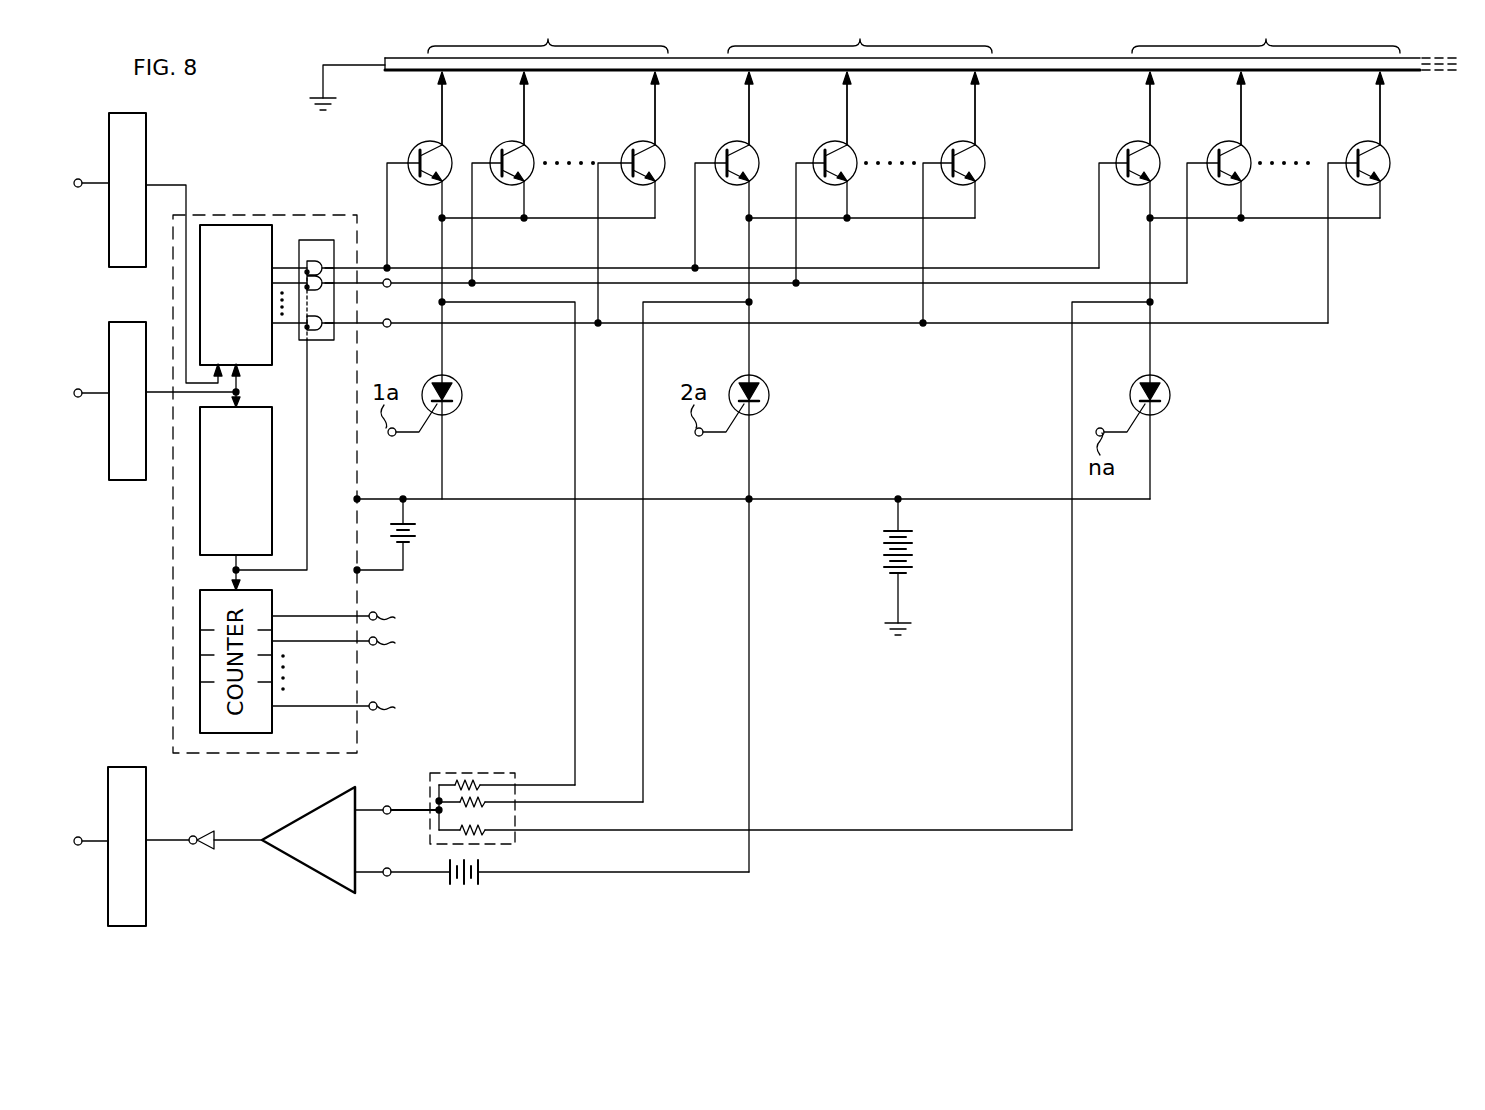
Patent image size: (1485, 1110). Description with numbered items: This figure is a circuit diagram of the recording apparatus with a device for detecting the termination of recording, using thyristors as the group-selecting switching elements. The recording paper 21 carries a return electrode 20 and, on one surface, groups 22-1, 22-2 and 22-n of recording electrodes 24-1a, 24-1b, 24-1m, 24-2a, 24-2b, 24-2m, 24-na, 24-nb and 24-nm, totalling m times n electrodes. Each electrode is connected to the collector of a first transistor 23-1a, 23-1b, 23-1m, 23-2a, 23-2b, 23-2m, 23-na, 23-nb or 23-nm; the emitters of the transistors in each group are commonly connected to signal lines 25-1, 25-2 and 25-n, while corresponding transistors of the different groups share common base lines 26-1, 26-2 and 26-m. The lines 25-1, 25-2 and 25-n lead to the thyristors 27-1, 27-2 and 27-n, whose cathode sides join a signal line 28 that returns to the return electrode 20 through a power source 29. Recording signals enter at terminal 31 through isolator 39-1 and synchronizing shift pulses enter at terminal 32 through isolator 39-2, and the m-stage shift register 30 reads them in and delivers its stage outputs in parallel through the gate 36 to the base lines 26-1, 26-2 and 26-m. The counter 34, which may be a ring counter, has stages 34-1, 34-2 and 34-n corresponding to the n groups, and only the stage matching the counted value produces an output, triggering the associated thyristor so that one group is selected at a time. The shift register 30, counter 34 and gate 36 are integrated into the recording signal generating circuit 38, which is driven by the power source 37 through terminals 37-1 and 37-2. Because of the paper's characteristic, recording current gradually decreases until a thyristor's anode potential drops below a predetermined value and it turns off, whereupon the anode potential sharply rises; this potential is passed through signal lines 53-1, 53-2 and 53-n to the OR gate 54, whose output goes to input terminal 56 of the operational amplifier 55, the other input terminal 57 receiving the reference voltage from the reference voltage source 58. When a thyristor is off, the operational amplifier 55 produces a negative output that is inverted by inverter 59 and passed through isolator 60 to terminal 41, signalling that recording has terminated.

The return electrode 20 is at (1043, 57).
The recording paper 21 is at (403, 73).
The group of recording electrodes 22-1 is at (548, 33).
The group of recording electrodes 22-2 is at (860, 33).
The group of recording electrodes 22-n is at (1266, 33).
The first transistor 23-1a is at (433, 154).
The first transistor 23-1b is at (519, 154).
The first transistor 23-1m is at (651, 154).
The first transistor 23-2a is at (748, 154).
The first transistor 23-2b is at (849, 154).
The first transistor 23-2m is at (974, 154).
The first transistor 23-na is at (1149, 154).
The first transistor 23-nb is at (1239, 154).
The first transistor 23-nm is at (1379, 154).
The recording electrode 24-1a is at (442, 94).
The recording electrode 24-1b is at (526, 94).
The recording electrode 24-1m is at (656, 94).
The recording electrode 24-2a is at (749, 94).
The recording electrode 24-2b is at (847, 94).
The recording electrode 24-2m is at (976, 94).
The recording electrode 24-na is at (1150, 94).
The recording electrode 24-nb is at (1242, 94).
The recording electrode 24-nm is at (1379, 94).
The signal line 25-1 is at (444, 343).
The signal line 25-2 is at (752, 343).
The signal line 25-n is at (1154, 343).
The common signal line 26-1 is at (998, 267).
The common signal line 26-2 is at (932, 283).
The common signal line 26-m is at (982, 326).
The thyristor 27-1 is at (462, 385).
The thyristor 27-2 is at (766, 385).
The thyristor 27-n is at (1166, 385).
The signal line 28 is at (805, 501).
The power source 29 is at (913, 545).
The shift register 30 is at (257, 225).
The terminal 31 is at (77, 179).
The terminal 32 is at (77, 389).
The counter 34 is at (200, 490).
The counter stage 34-1 is at (200, 607).
The counter stage 34-2 is at (200, 647).
The counter stage 34-n is at (200, 706).
The gate 36 is at (316, 240).
The power source 37 is at (416, 530).
The terminal 37-1 is at (358, 572).
The terminal 37-2 is at (359, 497).
The integrated circuit 38 is at (212, 215).
The isolator 39-1 is at (146, 126).
The isolator 39-2 is at (124, 482).
The terminal 41 is at (77, 837).
The signal line 53-1 is at (575, 551).
The signal line 53-2 is at (646, 551).
The signal line 53-n is at (1078, 554).
The OR gate 54 is at (478, 773).
The operational amplifier 55 is at (296, 859).
The input terminal 56 is at (387, 806).
The amplifier input 57 is at (387, 878).
The reference voltage source 58 is at (462, 886).
The inverter 59 is at (206, 832).
The isolator 60 is at (146, 779).